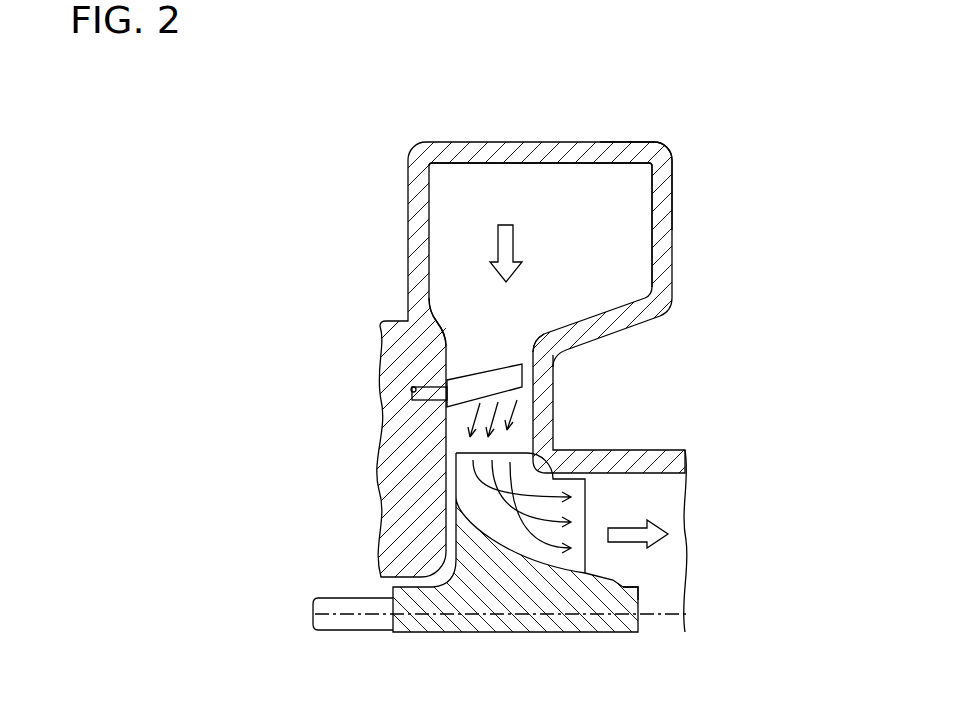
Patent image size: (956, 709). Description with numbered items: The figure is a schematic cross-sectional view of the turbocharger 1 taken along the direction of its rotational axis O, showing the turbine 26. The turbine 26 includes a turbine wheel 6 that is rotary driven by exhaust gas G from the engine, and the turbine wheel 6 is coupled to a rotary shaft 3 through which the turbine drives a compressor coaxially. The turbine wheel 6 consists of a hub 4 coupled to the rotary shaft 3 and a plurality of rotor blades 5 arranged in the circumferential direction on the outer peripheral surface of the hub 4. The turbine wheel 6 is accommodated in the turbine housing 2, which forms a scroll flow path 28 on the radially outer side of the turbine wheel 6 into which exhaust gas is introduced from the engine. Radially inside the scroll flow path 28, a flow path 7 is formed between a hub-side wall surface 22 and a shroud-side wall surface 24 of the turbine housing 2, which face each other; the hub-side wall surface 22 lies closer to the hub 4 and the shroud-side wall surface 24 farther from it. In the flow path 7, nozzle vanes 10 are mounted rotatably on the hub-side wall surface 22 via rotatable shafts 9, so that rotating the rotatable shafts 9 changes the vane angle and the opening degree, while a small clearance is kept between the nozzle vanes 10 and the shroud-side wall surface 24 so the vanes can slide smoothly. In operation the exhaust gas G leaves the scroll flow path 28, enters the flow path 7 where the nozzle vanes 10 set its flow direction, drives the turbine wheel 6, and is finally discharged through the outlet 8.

The turbocharger 1 is at (266, 88).
The turbine housing 2 is at (673, 192).
The rotary shaft 3 is at (358, 632).
The hub 4 is at (583, 620).
The rotor blades 5 is at (528, 548).
The turbine wheel 6 is at (658, 599).
The flow path 7 is at (457, 422).
The outlet 8 is at (647, 569).
The rotatable shafts 9 is at (422, 388).
The nozzle vanes 10 is at (507, 383).
The hub-side wall surface 22 is at (447, 353).
The shroud-side wall surface 24 is at (541, 366).
The turbine 26 is at (685, 103).
The scroll flow path 28 is at (607, 180).
The exhaust gas G is at (513, 237).
The rotational axis O is at (665, 615).